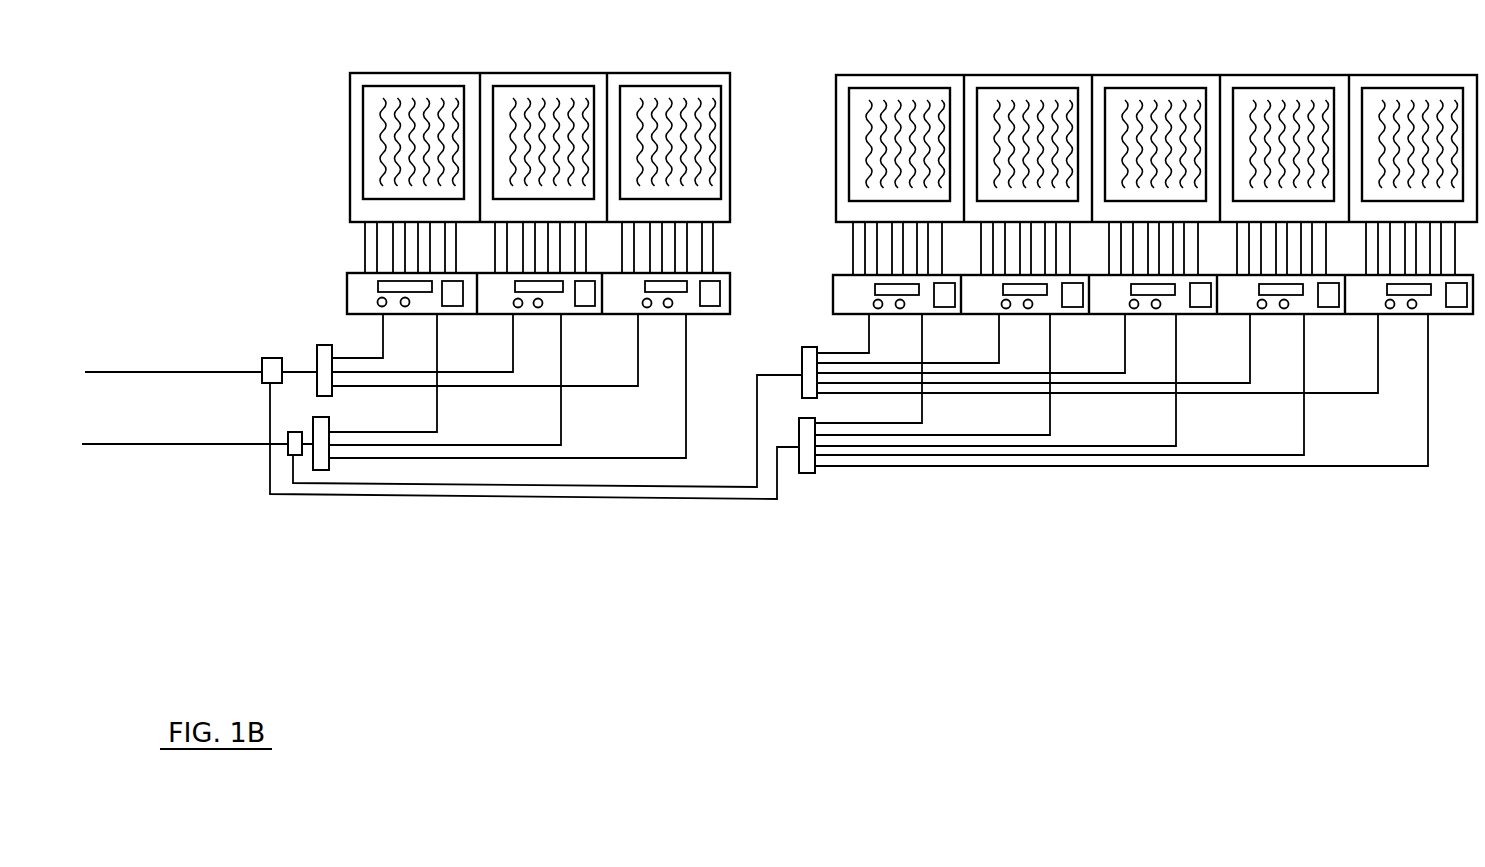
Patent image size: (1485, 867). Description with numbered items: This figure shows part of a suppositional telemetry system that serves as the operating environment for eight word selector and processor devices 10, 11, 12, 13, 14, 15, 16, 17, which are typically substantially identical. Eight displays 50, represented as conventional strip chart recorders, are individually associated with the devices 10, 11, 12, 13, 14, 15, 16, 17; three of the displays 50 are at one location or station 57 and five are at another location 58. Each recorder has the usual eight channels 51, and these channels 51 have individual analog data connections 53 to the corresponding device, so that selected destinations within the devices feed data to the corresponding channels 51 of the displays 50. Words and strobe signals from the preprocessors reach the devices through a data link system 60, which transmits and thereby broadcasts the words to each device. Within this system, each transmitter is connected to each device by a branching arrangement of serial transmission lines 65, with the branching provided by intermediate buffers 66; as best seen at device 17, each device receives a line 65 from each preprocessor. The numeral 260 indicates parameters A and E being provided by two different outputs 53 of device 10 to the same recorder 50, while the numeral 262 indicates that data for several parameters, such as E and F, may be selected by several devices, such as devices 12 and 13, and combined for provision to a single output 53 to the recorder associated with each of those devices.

The word selector and processor device 10 is at (428, 306).
The word selector and processor device 11 is at (555, 308).
The word selector and processor device 12 is at (680, 308).
The word selector and processor device 13 is at (913, 306).
The word selector and processor device 14 is at (1048, 306).
The word selector and processor device 15 is at (1172, 306).
The word selector and processor device 16 is at (1298, 306).
The word selector and processor device 17 is at (1427, 306).
The display 50 is at (874, 125).
The channel 51 is at (377, 100).
The analog data connection 53 is at (845, 267).
The station 57 is at (507, 507).
The location 58 is at (1118, 478).
The data link system 60 is at (255, 497).
The serial transmission line 65 is at (755, 421).
The intermediate buffer 66 is at (290, 435).
The parameters A and E indication 260 is at (368, 247).
The parameters E and F indication 262 is at (790, 223).